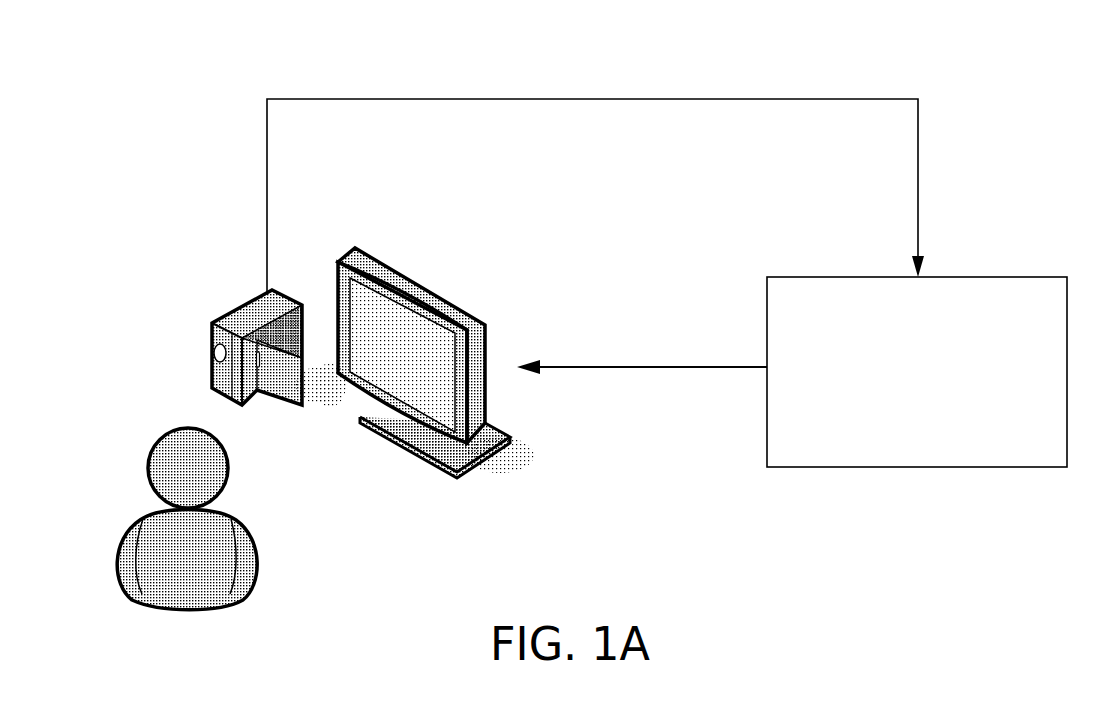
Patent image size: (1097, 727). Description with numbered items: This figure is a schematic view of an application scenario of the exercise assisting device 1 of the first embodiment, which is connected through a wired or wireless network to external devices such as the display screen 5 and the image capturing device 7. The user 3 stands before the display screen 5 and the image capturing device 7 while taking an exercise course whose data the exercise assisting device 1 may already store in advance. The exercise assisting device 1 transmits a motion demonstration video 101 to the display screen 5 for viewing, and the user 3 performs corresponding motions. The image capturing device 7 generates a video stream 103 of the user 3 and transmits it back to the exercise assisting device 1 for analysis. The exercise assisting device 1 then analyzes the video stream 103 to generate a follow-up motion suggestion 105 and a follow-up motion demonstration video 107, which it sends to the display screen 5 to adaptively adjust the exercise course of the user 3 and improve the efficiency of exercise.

The exercise assisting device 1 is at (917, 372).
The user 3 is at (167, 430).
The display screen 5 is at (380, 253).
The image capturing device 7 is at (235, 308).
The motion demonstration video 101 is at (672, 353).
The video stream 103 is at (572, 112).
The follow-up motion suggestion 105 is at (651, 332).
The follow-up motion demonstration video 107 is at (651, 332).